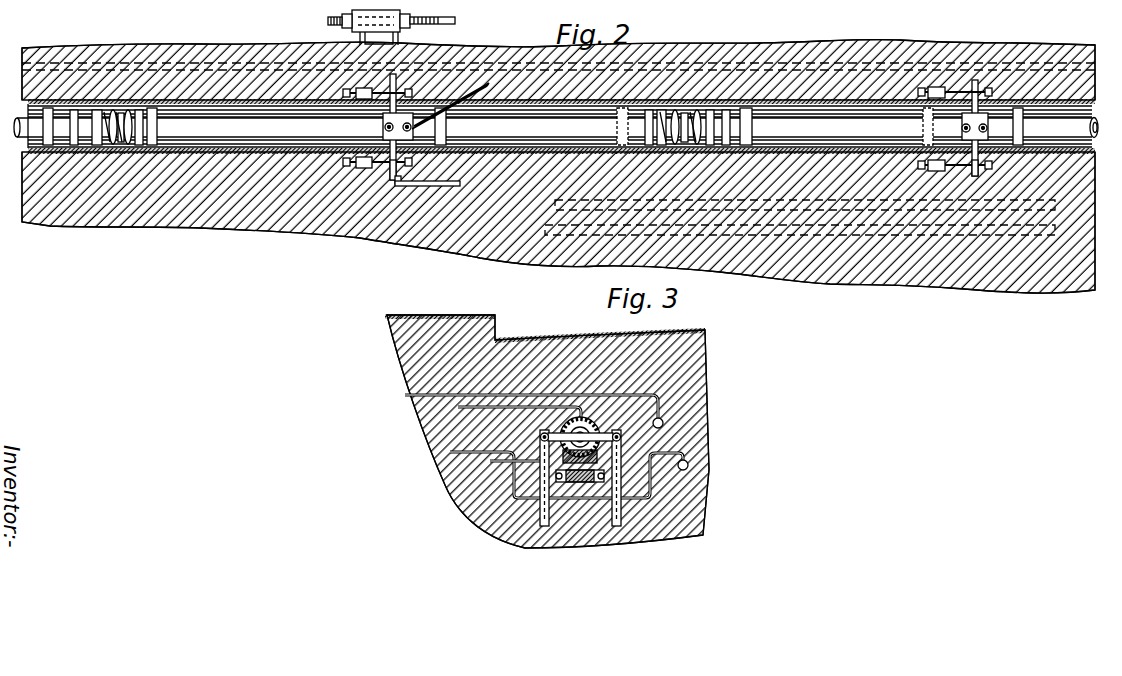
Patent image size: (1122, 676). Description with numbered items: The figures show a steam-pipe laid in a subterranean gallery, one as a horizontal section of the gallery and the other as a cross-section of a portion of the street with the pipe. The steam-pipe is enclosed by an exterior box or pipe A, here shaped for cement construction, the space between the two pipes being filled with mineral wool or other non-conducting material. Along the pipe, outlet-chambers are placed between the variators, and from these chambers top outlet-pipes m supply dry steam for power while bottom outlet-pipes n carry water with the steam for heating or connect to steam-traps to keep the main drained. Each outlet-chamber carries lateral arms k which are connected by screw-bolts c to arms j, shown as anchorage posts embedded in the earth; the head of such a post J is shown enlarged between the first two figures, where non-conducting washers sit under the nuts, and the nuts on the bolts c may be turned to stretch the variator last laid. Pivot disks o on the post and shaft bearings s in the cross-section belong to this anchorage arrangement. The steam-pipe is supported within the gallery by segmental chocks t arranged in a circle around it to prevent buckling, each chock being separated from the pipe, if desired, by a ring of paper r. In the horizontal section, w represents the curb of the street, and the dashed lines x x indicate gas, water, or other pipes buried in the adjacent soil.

In FIG. 2, the box or pipe A is at (556, 118).
In FIG. 3, the box or pipe A is at (582, 431).
In FIG. 2, the curb of the street w is at (558, 74).
In FIG. 3, the curb of the street w is at (545, 323).
In FIG. 2, the segmental chock t is at (533, 126).
In FIG. 2, the top outlet-pipe m is at (685, 124).
In FIG. 3, the top outlet-pipe m is at (519, 414).
In FIG. 2, the pivot disk o is at (686, 128).
In FIG. 2, the arm j is at (668, 129).
In FIG. 2, the screw-bolt c is at (663, 86).
In FIG. 2, the bracket J is at (379, 39).
In FIG. 2, the lateral arm k is at (676, 128).
In FIG. 3, the lateral arm k is at (580, 471).
In FIG. 2, the bottom outlet-pipe n is at (427, 188).
In FIG. 3, the bottom outlet-pipe n is at (531, 399).
In FIG. 2, the gas, water, or other pipes x is at (800, 211).
In FIG. 3, the gas, water, or other pipes x is at (675, 440).
In FIG. 3, the ring of paper r is at (566, 472).
In FIG. 3, the shaft bearing s is at (579, 482).